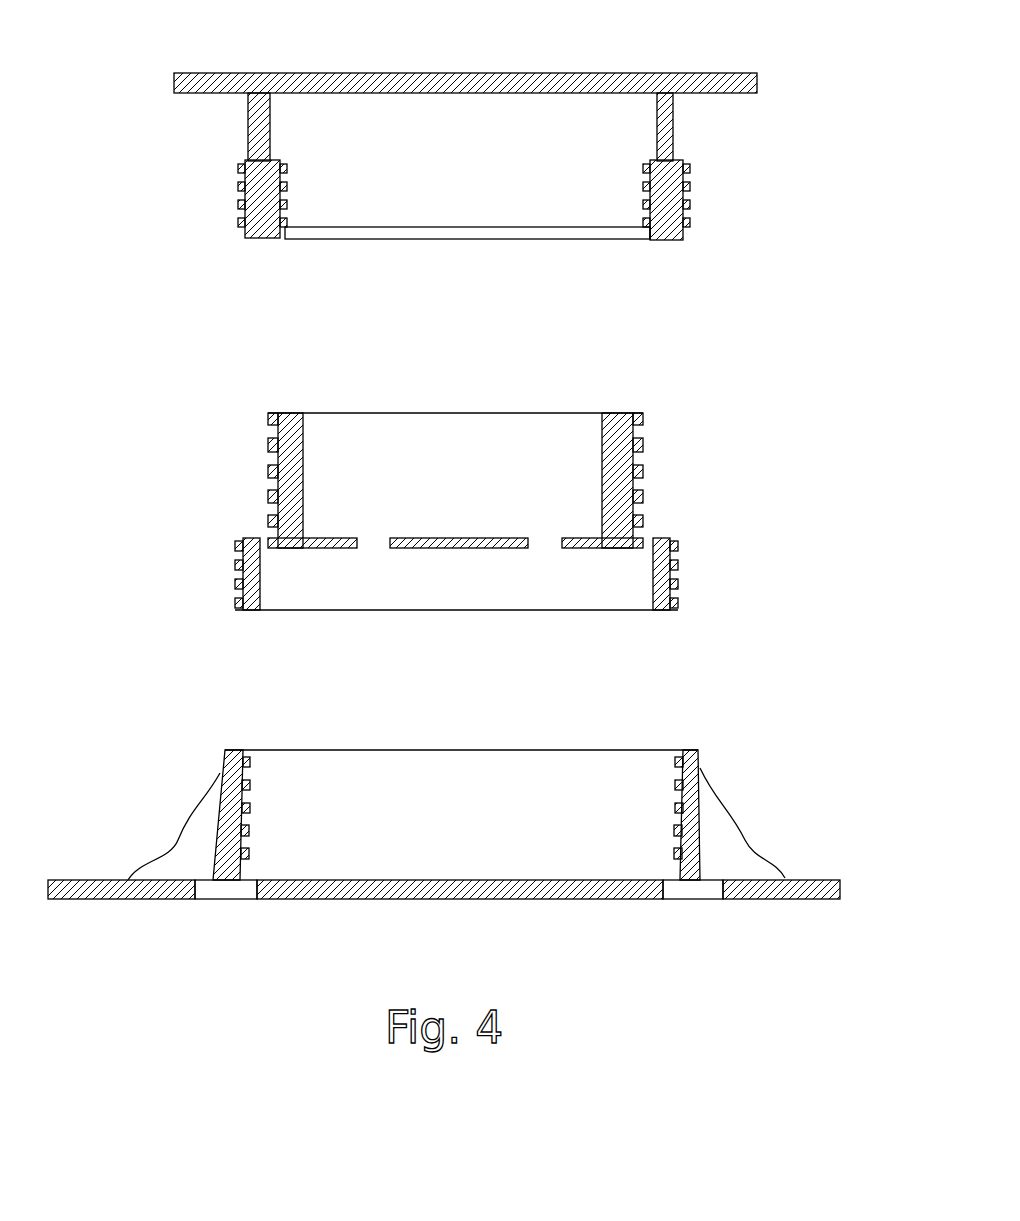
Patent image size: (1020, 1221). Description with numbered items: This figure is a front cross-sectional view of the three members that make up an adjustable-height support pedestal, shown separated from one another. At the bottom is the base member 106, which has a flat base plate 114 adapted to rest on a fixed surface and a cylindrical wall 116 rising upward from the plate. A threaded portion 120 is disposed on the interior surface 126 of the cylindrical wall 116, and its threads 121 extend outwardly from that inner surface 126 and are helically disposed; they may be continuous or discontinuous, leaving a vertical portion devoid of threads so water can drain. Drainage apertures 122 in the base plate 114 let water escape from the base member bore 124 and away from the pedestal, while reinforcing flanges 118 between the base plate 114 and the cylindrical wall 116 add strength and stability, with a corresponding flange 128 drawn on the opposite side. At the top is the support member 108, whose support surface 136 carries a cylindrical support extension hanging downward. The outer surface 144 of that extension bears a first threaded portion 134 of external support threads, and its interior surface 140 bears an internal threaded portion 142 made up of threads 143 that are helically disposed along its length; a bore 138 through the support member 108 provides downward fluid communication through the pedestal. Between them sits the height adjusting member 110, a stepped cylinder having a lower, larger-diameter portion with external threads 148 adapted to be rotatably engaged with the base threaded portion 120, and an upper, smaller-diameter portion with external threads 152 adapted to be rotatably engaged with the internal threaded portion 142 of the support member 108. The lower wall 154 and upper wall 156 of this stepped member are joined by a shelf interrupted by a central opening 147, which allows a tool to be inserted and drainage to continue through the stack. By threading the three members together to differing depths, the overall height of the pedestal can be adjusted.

The base member 106 is at (475, 829).
The support member 108 is at (540, 125).
The height adjusting member 110 is at (482, 516).
The base plate 114 is at (611, 887).
The cylindrical wall 116 is at (669, 784).
The reinforcing flanges 118 is at (177, 846).
The threaded portion 120 is at (652, 815).
The threads 121 is at (254, 797).
The drainage apertures 122 is at (228, 893).
The base member bore 124 is at (465, 837).
The interior surface 126 is at (286, 787).
The right support 128 is at (700, 806).
The first threaded portion 134 is at (232, 158).
The support surface 136 is at (700, 73).
The bore 138 is at (476, 182).
The interior surface 140 is at (270, 136).
The internal threaded portion 142 is at (270, 198).
The threads 143 is at (648, 164).
The outer surface 144 is at (673, 135).
The aperture 147 is at (543, 533).
The external threads 148 is at (680, 567).
The external threads 152 is at (645, 470).
The lower left wall 154 is at (235, 570).
The upper left wall 156 is at (268, 530).